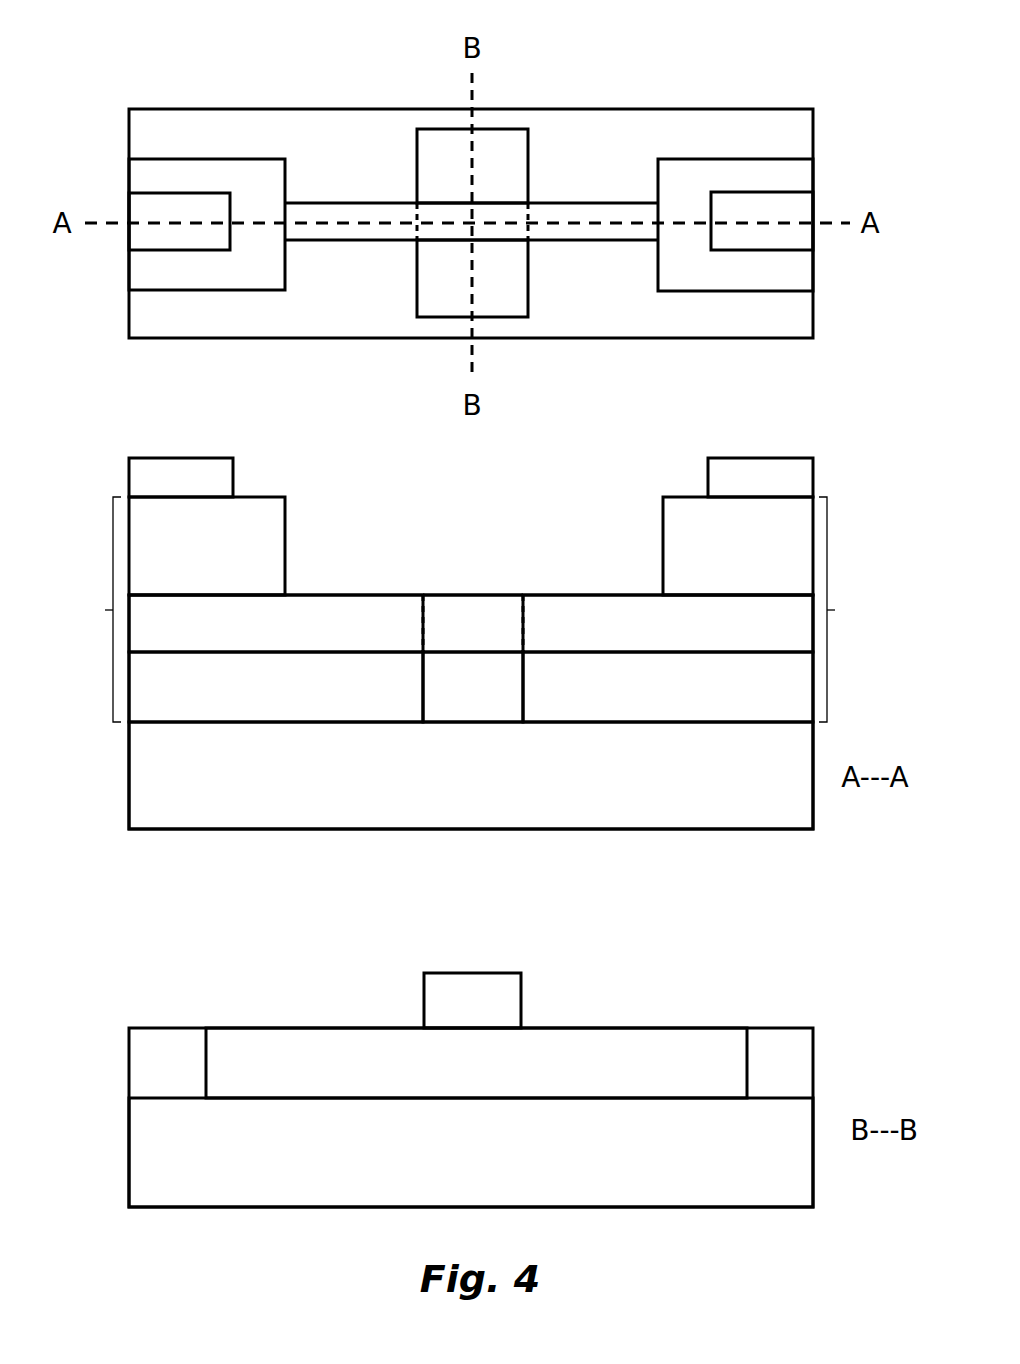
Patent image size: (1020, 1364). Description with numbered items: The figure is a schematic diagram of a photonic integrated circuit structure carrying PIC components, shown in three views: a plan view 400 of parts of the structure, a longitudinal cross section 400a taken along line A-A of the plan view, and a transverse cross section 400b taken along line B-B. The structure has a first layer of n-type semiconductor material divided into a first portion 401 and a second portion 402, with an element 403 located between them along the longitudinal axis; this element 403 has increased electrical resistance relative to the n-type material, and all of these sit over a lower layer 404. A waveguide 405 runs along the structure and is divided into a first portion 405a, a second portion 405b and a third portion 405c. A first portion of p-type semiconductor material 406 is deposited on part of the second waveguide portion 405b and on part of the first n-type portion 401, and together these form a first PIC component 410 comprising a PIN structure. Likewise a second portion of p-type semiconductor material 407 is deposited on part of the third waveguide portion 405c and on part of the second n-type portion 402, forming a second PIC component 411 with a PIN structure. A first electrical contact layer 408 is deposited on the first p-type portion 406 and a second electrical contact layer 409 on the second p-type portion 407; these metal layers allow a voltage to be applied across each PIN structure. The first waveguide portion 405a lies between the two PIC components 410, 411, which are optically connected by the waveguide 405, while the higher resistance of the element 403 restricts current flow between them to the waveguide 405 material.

The plan view 400 is at (118, 35).
The longitudinal cross section view 400a is at (434, 545).
The transverse cross section view 400b is at (435, 948).
The first portion of the first layer of n-type semiconductor material 401 is at (276, 433).
The second portion of the first layer of n-type semiconductor material 402 is at (668, 433).
The element 403 is at (476, 613).
The substrate 404 is at (471, 964).
The waveguide 405 is at (472, 1000).
The first portion of the waveguide 405a is at (472, 427).
The second portion of the waveguide 405b is at (276, 427).
The third portion of the waveguide 405c is at (668, 427).
The first portion of p-type semiconductor material 406 is at (207, 377).
The second portion of p-type semiconductor material 407 is at (735, 377).
The first electrical contact layer 408 is at (129, 345).
The second electrical contact layer 409 is at (808, 325).
The first PIC component 410 is at (76, 609).
The second PIC component 411 is at (864, 609).